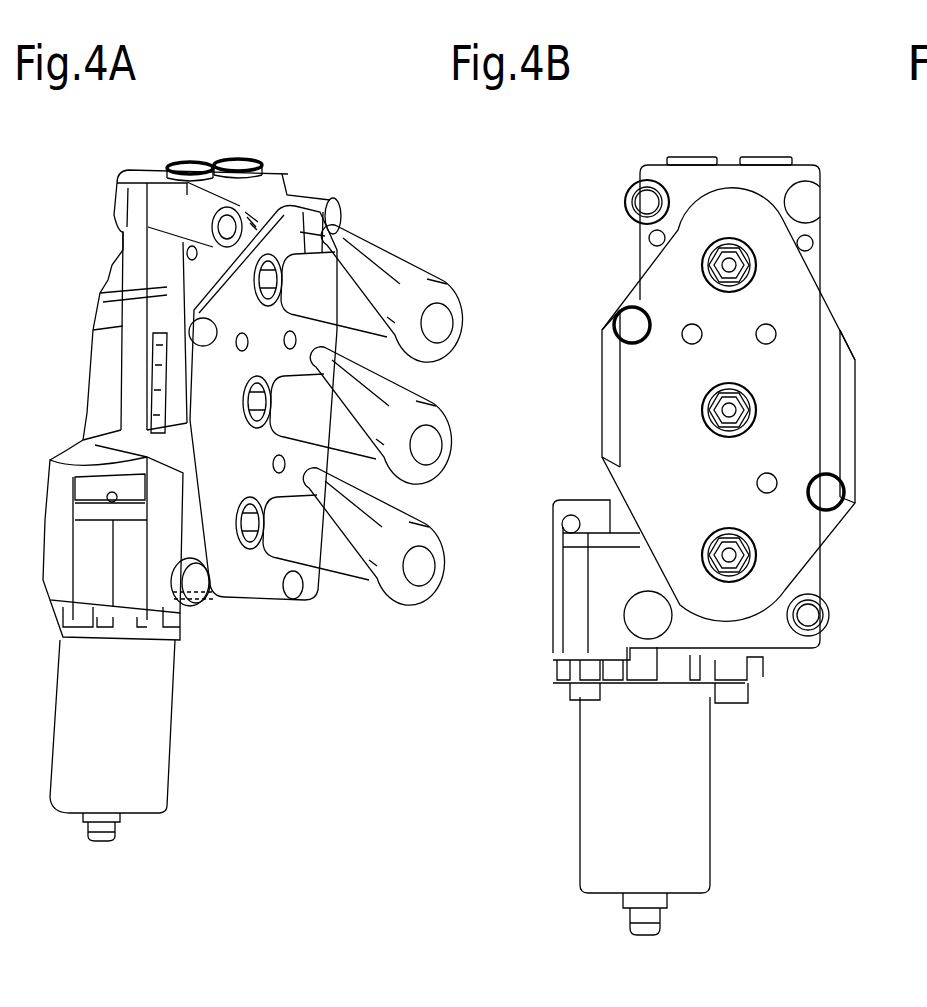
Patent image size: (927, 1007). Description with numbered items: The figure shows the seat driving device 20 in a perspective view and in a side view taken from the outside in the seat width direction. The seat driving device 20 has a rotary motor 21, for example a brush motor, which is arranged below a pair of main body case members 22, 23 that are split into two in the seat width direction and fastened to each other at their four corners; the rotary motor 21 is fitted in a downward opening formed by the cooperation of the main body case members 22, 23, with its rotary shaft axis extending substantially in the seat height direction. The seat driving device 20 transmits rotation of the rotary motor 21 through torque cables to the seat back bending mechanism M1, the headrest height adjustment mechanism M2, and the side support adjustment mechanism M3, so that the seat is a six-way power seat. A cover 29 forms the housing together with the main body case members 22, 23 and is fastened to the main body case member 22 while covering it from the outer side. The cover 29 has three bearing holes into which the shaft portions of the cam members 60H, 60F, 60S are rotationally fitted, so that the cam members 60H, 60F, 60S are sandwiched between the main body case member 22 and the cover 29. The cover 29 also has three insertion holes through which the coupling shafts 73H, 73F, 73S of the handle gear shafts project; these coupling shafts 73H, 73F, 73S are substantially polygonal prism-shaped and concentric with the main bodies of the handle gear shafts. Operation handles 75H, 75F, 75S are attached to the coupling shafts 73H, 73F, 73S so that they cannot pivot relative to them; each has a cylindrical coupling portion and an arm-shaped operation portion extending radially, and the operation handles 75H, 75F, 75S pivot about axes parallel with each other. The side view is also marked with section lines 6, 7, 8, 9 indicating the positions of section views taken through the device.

In FIG. 4A, the seat driving device 20 is at (141, 138).
In FIG. 4B, the seat driving device 20 is at (621, 103).
In FIG. 4A, the rotary motor 21 is at (160, 756).
In FIG. 4B, the rotary motor 21 is at (707, 828).
In FIG. 4A, the main body case member 22 is at (285, 170).
In FIG. 4B, the main body case member 22 is at (655, 163).
In FIG. 4A, the main body case member 23 is at (115, 200).
In FIG. 4A, the cover 29 is at (240, 580).
In FIG. 4B, the cover 29 is at (823, 530).
In FIG. 4A, the seat back bending mechanism M1 is at (238, 159).
In FIG. 4A, the headrest height adjustment mechanism M2 is at (189, 162).
In FIG. 4A, the side support adjustment mechanism M3 is at (195, 607).
In FIG. 4A, the operation handle 75H is at (464, 322).
In FIG. 4A, the operation handle 75F is at (453, 446).
In FIG. 4A, the operation handle 75S is at (445, 572).
In FIG. 4B, the coupling shaft 73H is at (753, 266).
In FIG. 4B, the coupling shaft 73F is at (760, 407).
In FIG. 4B, the coupling shaft 73S is at (760, 555).
In FIG. 4B, the cam member 60H is at (686, 323).
In FIG. 4B, the cam member 60F is at (772, 323).
In FIG. 4B, the cam member 60S is at (757, 483).
In FIG. 4B, the section line 6- 6 is at (585, 410).
In FIG. 4B, the section line 7- 7 is at (693, 140).
In FIG. 4B, the section line 8- 8 is at (765, 97).
In FIG. 4B, the section line 9- 9 is at (730, 120).